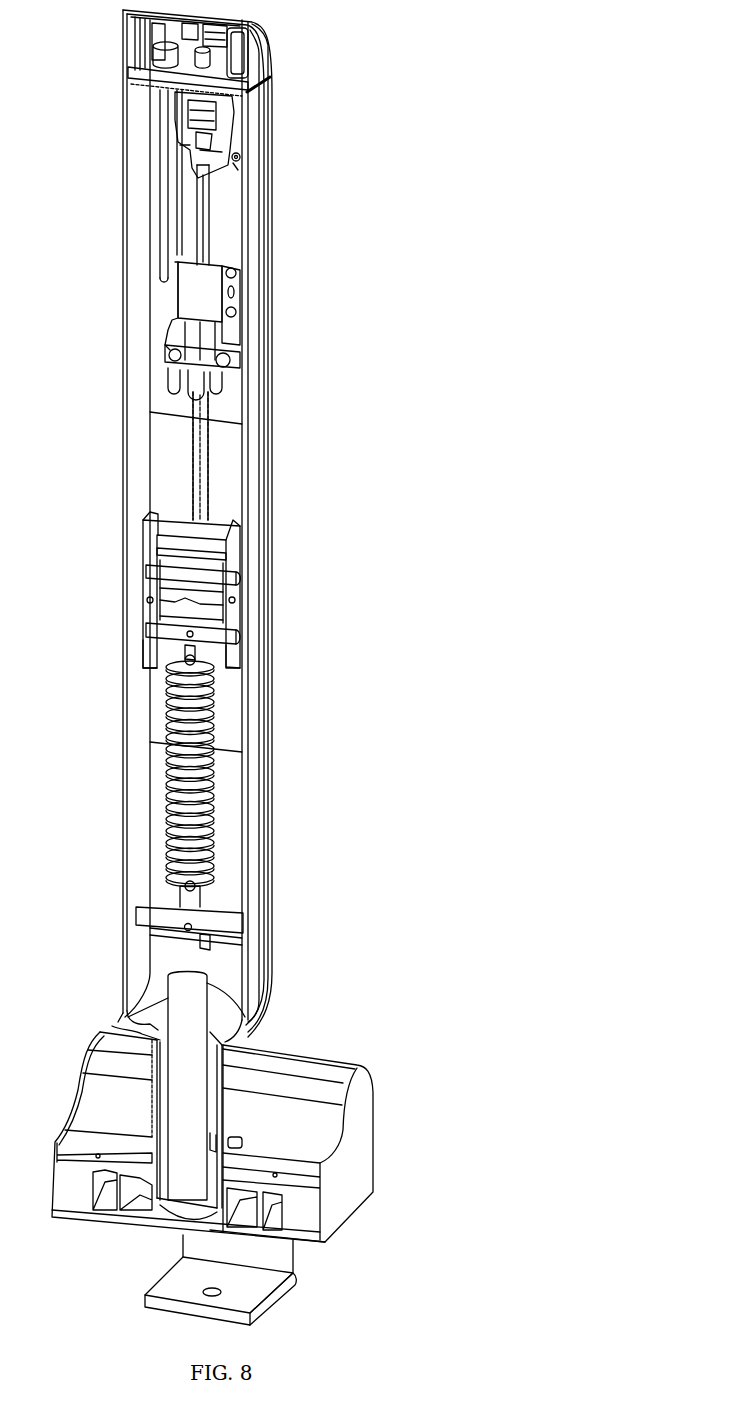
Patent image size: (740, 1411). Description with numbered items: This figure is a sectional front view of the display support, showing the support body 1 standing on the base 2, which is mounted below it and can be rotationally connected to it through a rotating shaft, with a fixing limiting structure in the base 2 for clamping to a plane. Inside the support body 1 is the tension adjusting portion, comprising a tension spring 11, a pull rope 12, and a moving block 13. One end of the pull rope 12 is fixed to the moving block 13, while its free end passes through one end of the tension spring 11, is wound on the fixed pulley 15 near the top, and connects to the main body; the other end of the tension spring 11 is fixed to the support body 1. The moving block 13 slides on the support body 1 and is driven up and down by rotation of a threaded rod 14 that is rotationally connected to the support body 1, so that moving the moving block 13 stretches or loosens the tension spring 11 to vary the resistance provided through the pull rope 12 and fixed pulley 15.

The support body 1 is at (253, 483).
The base 2 is at (300, 1063).
The tension spring 11 is at (215, 768).
The pull rope 12 is at (196, 487).
The moving block 13 is at (203, 312).
The threaded rod 14 is at (198, 212).
The fixed pulley 15 is at (195, 148).